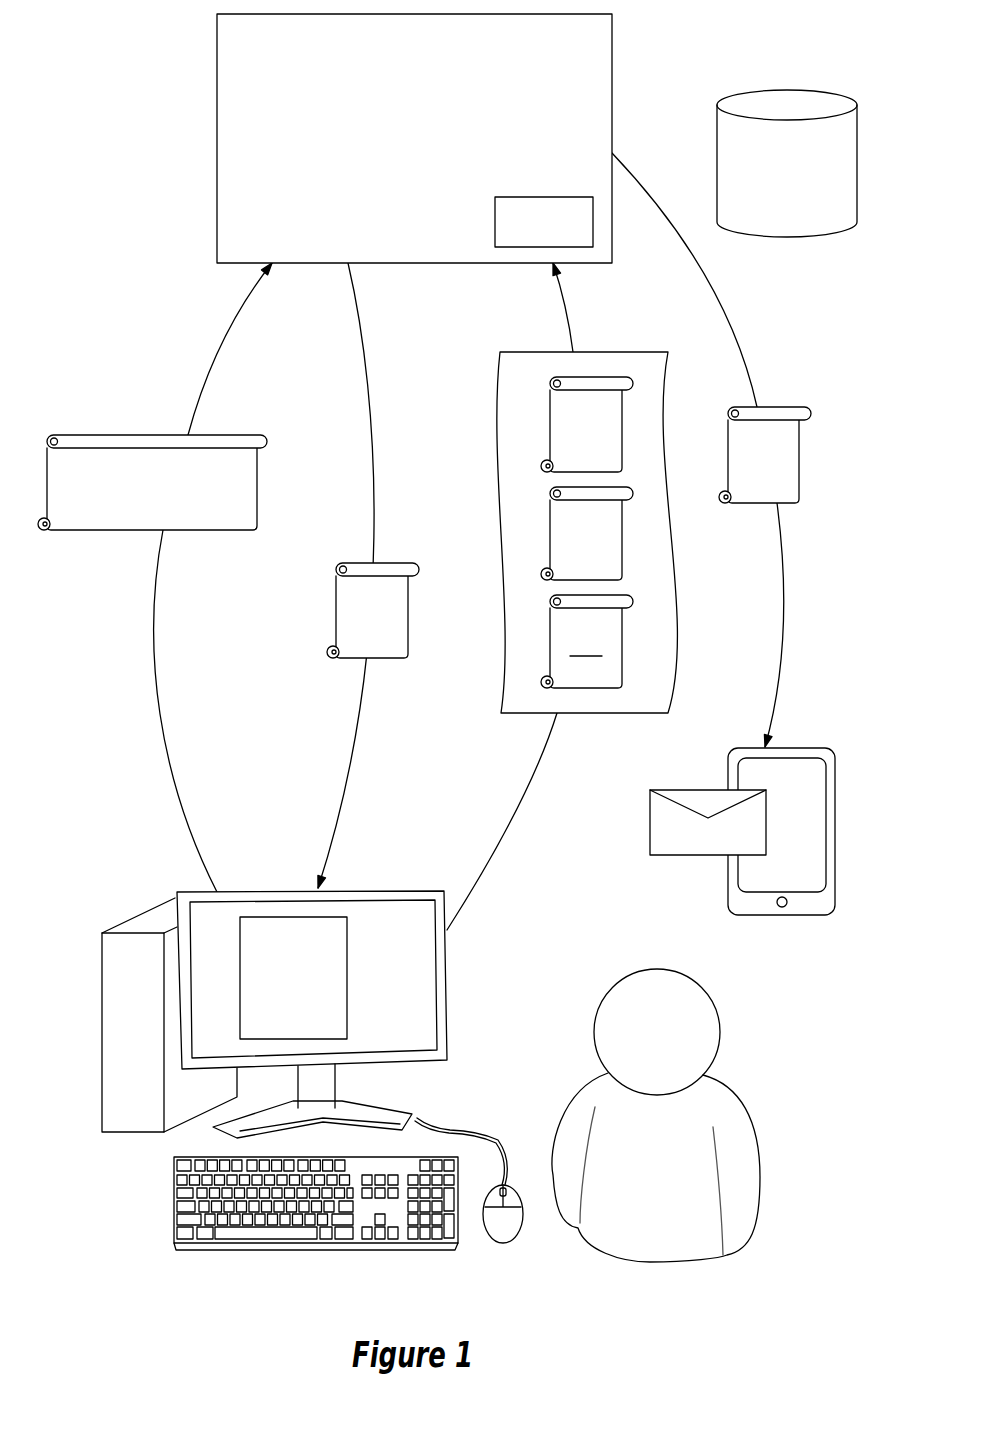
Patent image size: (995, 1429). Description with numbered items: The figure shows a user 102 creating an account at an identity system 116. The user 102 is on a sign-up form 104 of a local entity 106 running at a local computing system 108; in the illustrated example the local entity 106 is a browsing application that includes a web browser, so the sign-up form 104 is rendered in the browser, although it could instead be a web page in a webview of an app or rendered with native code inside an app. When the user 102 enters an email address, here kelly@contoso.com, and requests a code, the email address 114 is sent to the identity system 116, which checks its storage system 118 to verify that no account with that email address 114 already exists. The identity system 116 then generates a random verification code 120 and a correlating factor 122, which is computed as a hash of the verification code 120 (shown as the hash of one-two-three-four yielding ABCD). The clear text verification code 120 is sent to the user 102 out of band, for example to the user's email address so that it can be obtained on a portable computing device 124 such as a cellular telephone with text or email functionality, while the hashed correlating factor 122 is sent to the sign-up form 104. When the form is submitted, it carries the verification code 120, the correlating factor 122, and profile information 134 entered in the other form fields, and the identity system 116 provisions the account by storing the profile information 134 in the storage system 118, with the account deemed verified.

The user 102 is at (760, 1170).
The sign-up form 104 is at (310, 989).
The local entity 106 is at (408, 946).
The local computing system 108 is at (312, 1040).
The email address 114 is at (108, 435).
The identity system 116 is at (612, 64).
The storage system 118 is at (803, 181).
The verification code 120 is at (602, 546).
The correlating factor 122 is at (540, 197).
The portable computing device 124 is at (812, 748).
The profile information 134 is at (602, 437).